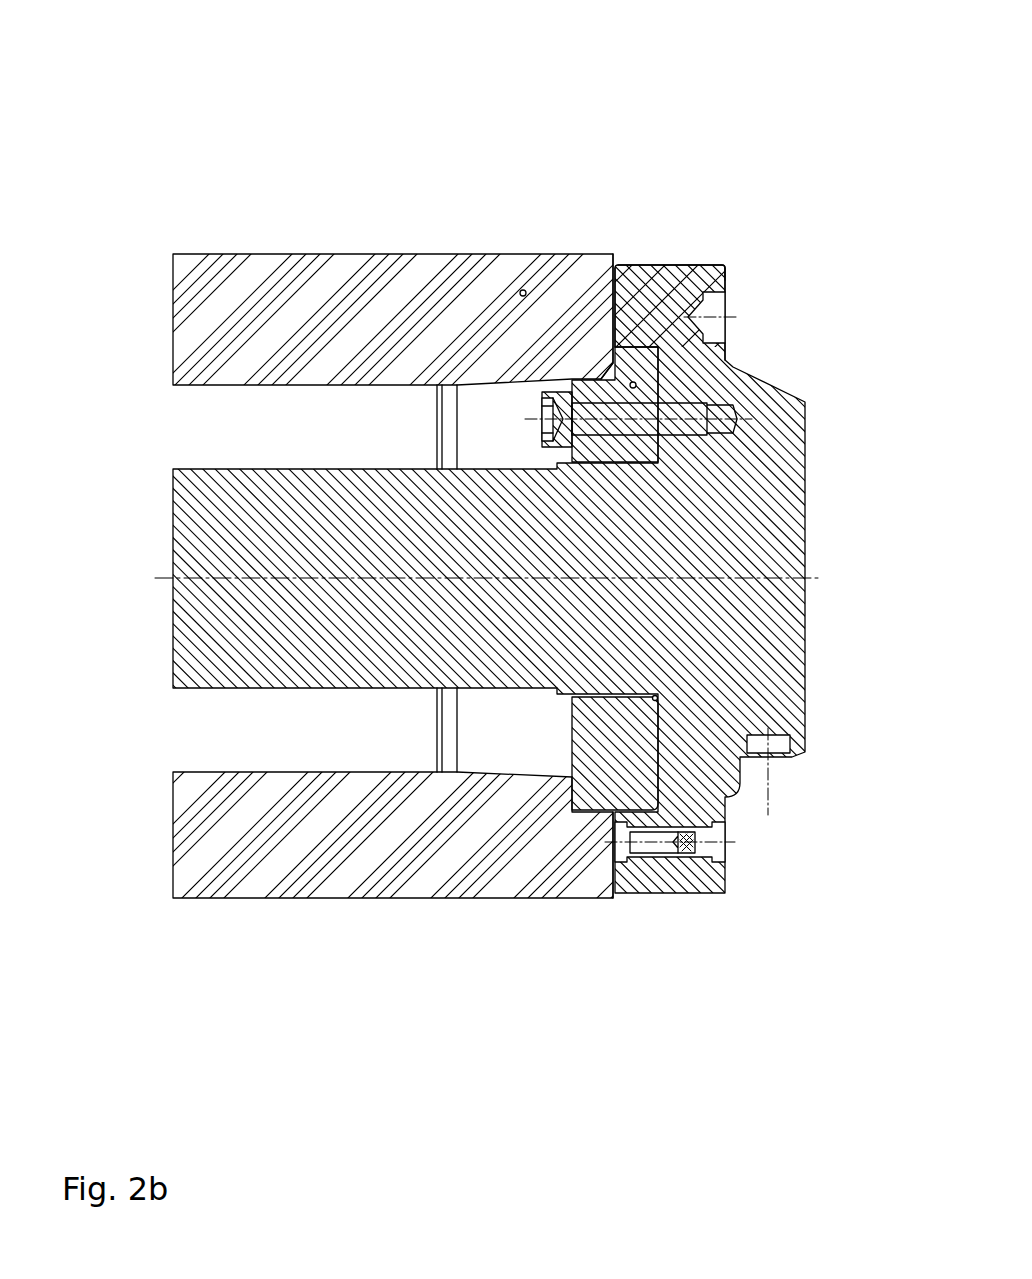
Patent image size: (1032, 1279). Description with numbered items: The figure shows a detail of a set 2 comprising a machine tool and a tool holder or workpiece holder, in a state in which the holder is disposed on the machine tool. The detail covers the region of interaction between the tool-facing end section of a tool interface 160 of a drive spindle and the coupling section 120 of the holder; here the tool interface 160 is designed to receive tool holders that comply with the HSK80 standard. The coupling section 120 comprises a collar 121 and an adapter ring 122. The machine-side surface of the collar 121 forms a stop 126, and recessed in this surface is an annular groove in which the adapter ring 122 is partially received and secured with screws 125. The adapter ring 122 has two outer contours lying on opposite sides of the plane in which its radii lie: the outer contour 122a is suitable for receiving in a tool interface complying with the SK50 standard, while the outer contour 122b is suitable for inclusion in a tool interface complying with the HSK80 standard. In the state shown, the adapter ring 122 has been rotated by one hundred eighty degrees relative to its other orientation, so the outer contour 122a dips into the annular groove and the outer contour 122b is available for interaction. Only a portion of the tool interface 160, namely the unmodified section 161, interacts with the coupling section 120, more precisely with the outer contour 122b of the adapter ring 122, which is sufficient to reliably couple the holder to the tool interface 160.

The set 2 is at (268, 196).
The tool interface 160 is at (222, 287).
The section 161 is at (612, 232).
The coupling section 120 is at (795, 928).
The outer contour 122b is at (587, 378).
The outer contour 122a is at (720, 262).
The stop 126 is at (618, 272).
The collar 121 is at (526, 292).
The screws 125 is at (592, 422).
The adapter ring 122 is at (726, 821).